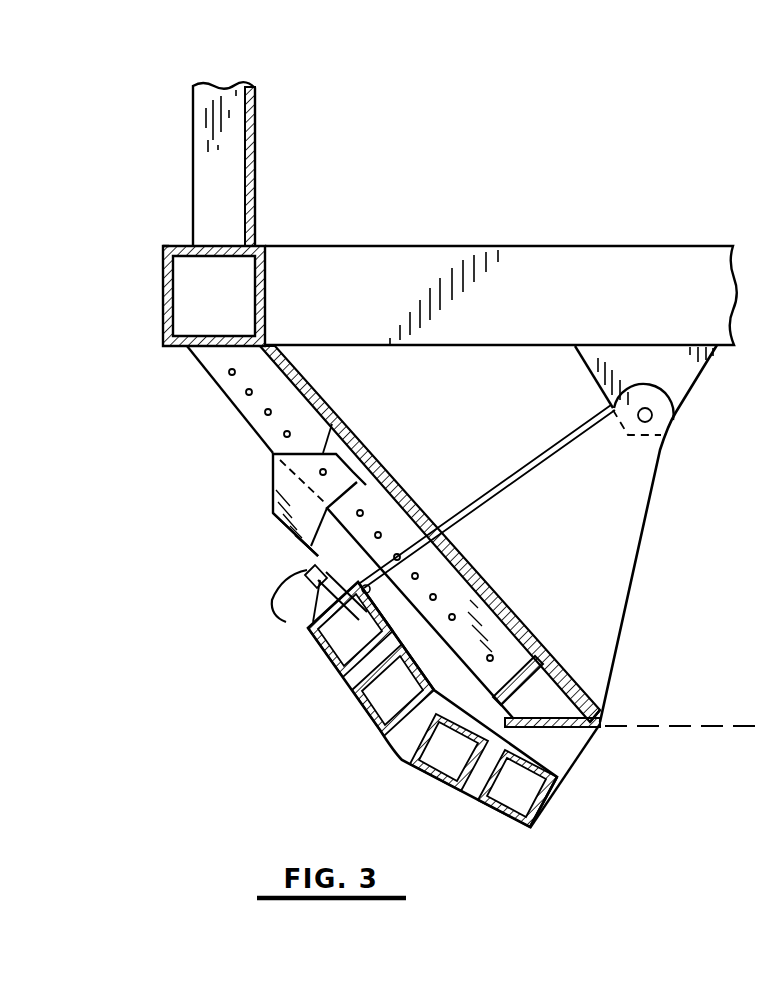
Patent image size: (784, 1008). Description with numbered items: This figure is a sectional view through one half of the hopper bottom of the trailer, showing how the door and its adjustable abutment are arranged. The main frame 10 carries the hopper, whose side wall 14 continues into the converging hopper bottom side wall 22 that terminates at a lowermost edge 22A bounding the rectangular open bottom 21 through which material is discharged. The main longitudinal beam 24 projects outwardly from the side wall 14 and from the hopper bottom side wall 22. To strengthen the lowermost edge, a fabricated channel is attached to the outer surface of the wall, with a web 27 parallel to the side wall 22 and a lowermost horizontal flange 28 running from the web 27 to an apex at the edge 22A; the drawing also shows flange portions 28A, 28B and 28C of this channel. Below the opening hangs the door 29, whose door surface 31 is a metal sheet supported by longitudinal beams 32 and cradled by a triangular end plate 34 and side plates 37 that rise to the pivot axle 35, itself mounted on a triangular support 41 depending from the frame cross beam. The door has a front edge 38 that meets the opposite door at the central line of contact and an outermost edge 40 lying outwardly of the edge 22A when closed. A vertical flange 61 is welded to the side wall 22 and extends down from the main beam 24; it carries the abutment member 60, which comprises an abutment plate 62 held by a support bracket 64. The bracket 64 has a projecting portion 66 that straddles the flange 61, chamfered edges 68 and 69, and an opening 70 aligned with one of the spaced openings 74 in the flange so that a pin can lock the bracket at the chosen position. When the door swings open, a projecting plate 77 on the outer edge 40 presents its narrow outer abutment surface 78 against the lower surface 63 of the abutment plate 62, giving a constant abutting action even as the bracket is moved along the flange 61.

The main frame 10 is at (158, 238).
The side wall 14 is at (257, 182).
The web 27 is at (563, 258).
The main longitudinal beam 24 is at (268, 300).
The hopper bottom side wall 22 is at (331, 403).
The lowermost edge 22A is at (604, 716).
The flange 61 is at (255, 430).
The openings 74 is at (246, 392).
The abutment member 60 is at (270, 520).
The chamfered edge 68 is at (272, 468).
The support bracket 64 is at (272, 500).
The abutment plate 62 is at (312, 556).
The chamfered edge 69 is at (332, 424).
The opening 70 is at (327, 472).
The projecting portion 66 is at (387, 486).
The projecting plate 77 is at (370, 592).
The outer abutment surface 78 is at (306, 578).
The lower surface 63 is at (282, 606).
The outermost edge 40 is at (306, 628).
The side plates 37 is at (545, 460).
The triangular support 41 is at (668, 368).
The pivot axle 35 is at (653, 415).
The triangular end plate 34 is at (600, 530).
The lowermost horizontal flange 28 is at (592, 672).
The end plate flange 28A is at (520, 652).
The end plate bottom flange 28B is at (524, 706).
The end plate lower edge 28C is at (564, 735).
The open bottom 21 is at (645, 730).
The door 29 is at (366, 749).
The door surface 31 is at (427, 672).
The longitudinal beams 32 is at (356, 698).
The front edge 38 is at (549, 806).